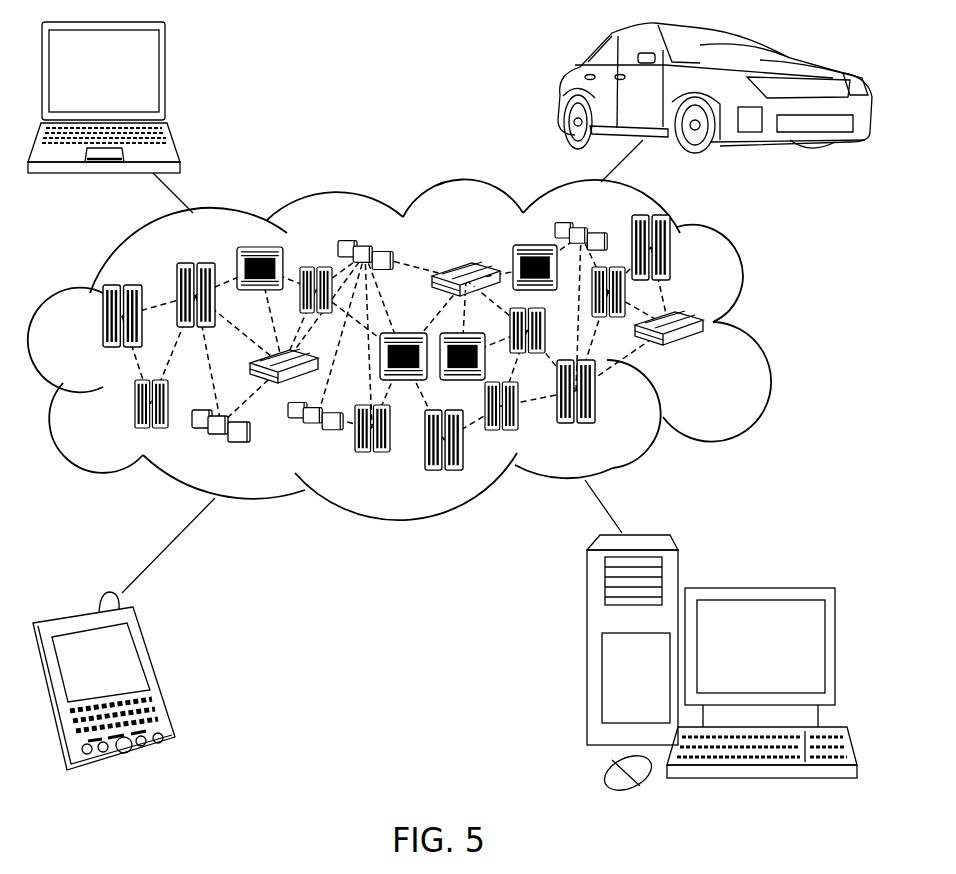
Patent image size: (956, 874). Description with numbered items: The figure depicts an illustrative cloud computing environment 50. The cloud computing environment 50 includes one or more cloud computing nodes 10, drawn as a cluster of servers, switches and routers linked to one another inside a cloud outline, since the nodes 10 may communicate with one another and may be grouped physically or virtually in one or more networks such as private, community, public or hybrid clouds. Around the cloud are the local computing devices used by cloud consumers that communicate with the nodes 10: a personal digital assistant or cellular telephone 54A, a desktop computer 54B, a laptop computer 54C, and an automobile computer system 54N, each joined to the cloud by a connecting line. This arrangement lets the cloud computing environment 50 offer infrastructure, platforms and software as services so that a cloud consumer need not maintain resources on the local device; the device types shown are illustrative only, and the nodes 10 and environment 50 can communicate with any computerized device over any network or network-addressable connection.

The cloud computing node 10 is at (713, 359).
The cloud computing environment 50 is at (757, 329).
The personal digital assistant (PDA) or cellular telephone 54A is at (157, 672).
The desktop computer 54B is at (757, 587).
The laptop computer 54C is at (168, 78).
The automobile computer system 54N is at (560, 93).